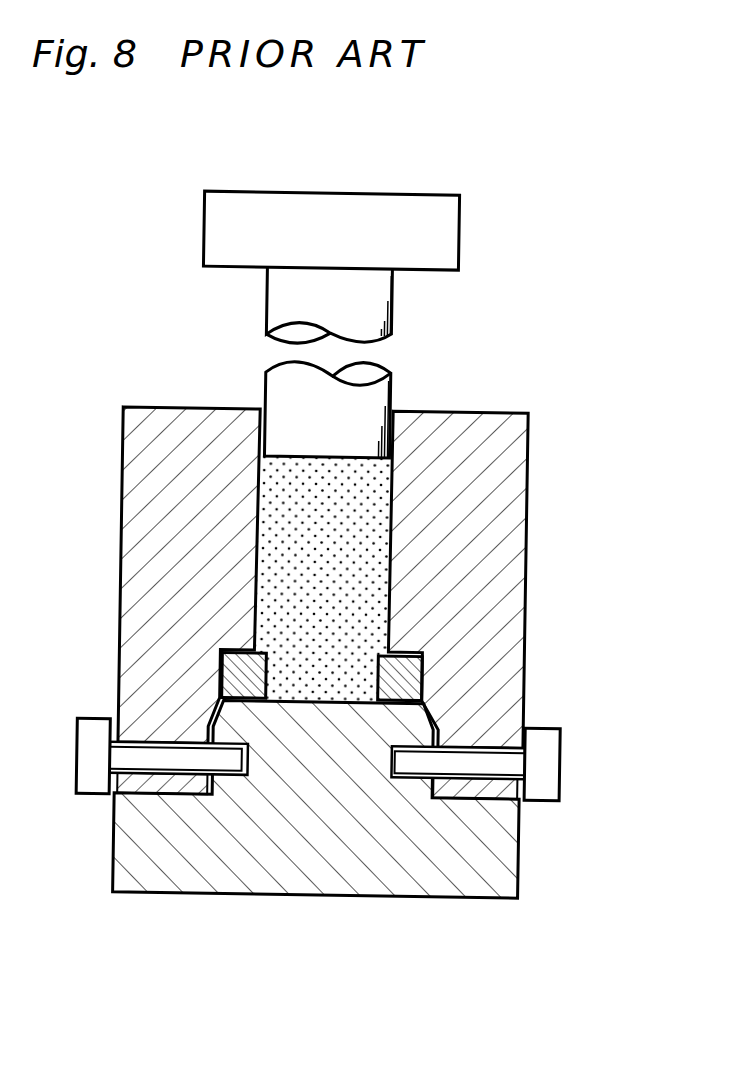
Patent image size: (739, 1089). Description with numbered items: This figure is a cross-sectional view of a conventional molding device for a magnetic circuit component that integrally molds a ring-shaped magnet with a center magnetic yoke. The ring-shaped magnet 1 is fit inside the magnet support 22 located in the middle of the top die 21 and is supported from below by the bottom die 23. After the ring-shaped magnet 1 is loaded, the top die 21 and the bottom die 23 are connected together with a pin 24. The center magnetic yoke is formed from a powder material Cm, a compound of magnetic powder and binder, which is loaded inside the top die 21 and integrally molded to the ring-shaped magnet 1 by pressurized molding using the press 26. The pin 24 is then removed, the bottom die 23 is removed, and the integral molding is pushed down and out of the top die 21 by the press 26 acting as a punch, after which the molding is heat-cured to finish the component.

The press 26 is at (368, 399).
The powder material Cm is at (379, 511).
The top die 21 is at (455, 575).
The magnet support 22 is at (228, 678).
The ring-shaped magnet 1 is at (407, 681).
The pin 24 is at (553, 758).
The bottom die 23 is at (432, 845).